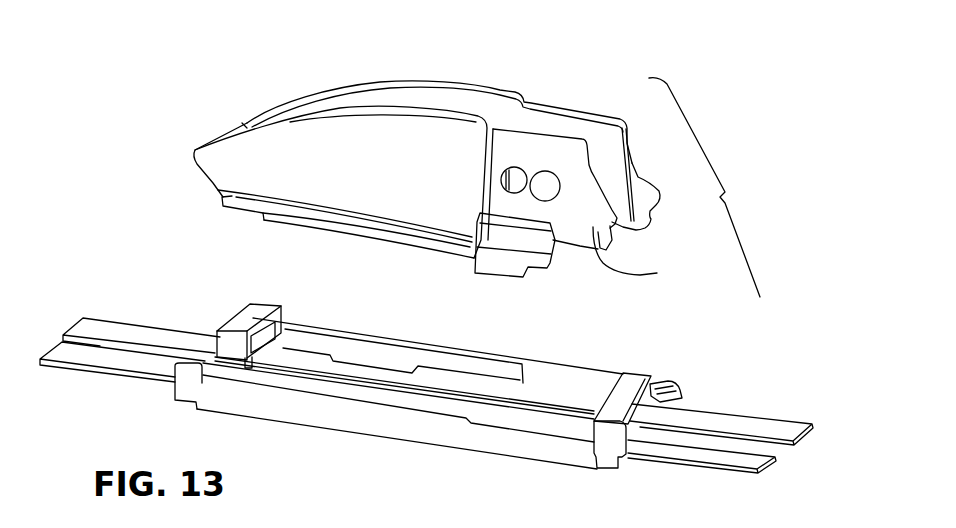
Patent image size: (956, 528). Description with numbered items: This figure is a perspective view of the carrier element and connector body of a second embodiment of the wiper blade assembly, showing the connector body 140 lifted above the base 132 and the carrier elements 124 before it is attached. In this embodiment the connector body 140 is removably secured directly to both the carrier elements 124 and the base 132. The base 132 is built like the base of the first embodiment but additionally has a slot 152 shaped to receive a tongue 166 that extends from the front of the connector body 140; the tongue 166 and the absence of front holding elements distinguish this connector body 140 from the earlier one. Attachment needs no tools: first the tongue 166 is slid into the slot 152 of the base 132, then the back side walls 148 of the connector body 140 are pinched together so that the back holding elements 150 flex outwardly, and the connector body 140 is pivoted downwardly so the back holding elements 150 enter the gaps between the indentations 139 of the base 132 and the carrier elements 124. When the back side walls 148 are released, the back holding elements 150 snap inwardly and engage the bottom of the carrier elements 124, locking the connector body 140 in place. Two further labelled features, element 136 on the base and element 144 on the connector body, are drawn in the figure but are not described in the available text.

The carrier elements 124 is at (708, 423).
The base 132 is at (410, 441).
The groove / channel 136 is at (365, 367).
The indentations 139 is at (568, 375).
The connector body 140 is at (273, 93).
The cover top surface 144 is at (383, 92).
The back side walls 148 is at (645, 177).
The back holding elements 150 is at (527, 273).
The slot 152 is at (264, 306).
The tongue 166 is at (237, 205).